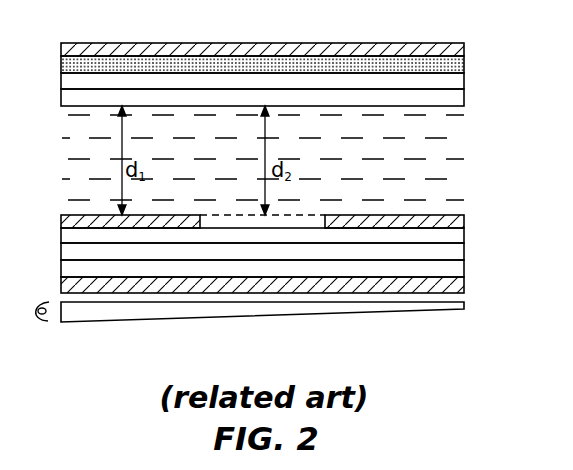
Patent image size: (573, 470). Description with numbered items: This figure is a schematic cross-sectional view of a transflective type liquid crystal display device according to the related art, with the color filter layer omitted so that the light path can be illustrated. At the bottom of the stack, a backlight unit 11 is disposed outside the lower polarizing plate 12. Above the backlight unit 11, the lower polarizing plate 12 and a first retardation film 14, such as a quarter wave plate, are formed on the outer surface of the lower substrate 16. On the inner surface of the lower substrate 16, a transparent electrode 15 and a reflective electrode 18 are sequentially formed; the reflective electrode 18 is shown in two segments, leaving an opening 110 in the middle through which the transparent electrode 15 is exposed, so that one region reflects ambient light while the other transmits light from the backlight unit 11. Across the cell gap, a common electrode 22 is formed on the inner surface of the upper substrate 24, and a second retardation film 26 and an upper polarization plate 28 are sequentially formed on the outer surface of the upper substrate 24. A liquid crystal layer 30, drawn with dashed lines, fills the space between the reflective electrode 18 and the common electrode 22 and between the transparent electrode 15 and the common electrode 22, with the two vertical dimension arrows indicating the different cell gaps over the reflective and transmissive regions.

The backlight unit 11 is at (465, 306).
The lower polarizing plate 12 is at (465, 288).
The first retardation film 14 is at (465, 270).
The transparent electrode 15 is at (465, 234).
The lower substrate 16 is at (465, 252).
The reflective electrode 18 is at (465, 222).
The common electrode 22 is at (465, 102).
The upper substrate 24 is at (465, 85).
The second retardation film 26 is at (465, 69).
The upper polarization plate 28 is at (465, 53).
The liquid crystal layer 30 is at (472, 112).
The transmissive opening 110 is at (310, 214).